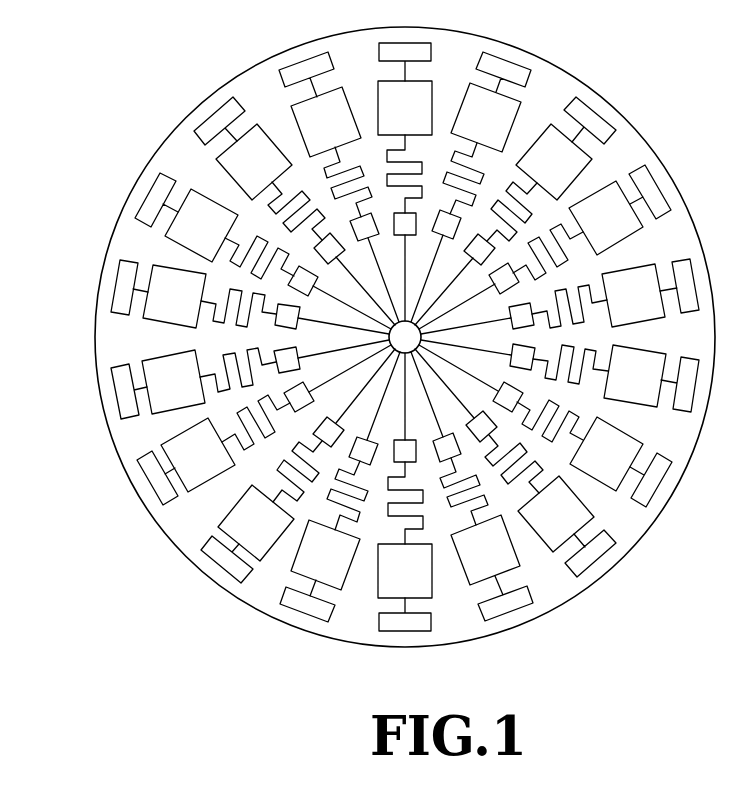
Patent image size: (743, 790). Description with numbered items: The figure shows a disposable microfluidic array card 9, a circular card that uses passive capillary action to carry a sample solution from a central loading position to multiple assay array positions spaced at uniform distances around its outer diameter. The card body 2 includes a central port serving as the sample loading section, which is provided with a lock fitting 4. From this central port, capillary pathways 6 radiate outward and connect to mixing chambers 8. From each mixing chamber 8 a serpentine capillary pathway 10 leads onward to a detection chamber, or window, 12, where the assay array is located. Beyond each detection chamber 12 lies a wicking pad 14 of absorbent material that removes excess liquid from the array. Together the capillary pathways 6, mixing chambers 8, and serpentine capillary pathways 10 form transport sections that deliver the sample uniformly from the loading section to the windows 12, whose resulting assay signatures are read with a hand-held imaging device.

The card body 2 is at (242, 90).
The lock fitting 4 is at (402, 328).
The capillary pathways 6 is at (460, 348).
The mixing chambers 8 is at (480, 247).
The disposable microfluidic array card 9 is at (597, 70).
The serpentine capillary pathways 10 is at (322, 168).
The detection chambers (windows) 12 is at (404, 339).
The wicking pads 14 is at (207, 118).